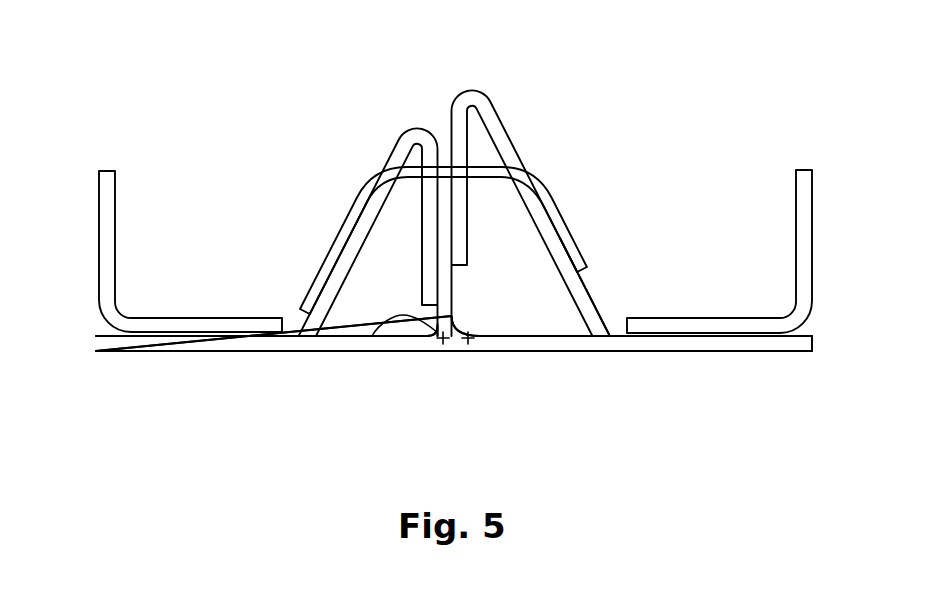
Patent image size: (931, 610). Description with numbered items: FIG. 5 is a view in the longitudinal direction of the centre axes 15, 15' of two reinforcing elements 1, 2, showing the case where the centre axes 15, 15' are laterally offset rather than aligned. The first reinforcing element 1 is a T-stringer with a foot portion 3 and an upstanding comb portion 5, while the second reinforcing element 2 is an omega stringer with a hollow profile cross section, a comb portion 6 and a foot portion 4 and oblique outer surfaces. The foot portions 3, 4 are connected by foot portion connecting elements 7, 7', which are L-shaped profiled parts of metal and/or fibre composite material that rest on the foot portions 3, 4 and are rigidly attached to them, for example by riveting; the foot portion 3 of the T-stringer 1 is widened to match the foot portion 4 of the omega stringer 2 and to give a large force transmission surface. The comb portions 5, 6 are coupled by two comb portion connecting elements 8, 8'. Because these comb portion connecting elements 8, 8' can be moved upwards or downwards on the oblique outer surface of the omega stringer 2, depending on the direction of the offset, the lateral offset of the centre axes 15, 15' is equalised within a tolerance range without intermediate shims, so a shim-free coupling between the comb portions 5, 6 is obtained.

The first reinforcing element 1 is at (440, 340).
The second reinforcing element 2 is at (592, 313).
The foot portion 3 is at (157, 340).
The foot portion 4 is at (740, 340).
The comb portion 5 is at (480, 340).
The comb portion 6 is at (357, 248).
The foot portion connecting element 7 is at (719, 251).
The foot portion connecting element 7' is at (190, 251).
The comb portion connecting element 8 is at (530, 175).
The comb portion connecting element 8' is at (368, 191).
The centre axis 15 is at (367, 377).
The centre axis 15' is at (512, 401).